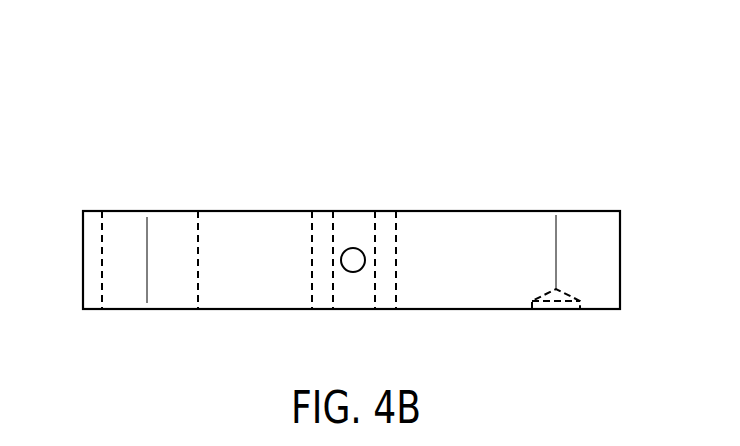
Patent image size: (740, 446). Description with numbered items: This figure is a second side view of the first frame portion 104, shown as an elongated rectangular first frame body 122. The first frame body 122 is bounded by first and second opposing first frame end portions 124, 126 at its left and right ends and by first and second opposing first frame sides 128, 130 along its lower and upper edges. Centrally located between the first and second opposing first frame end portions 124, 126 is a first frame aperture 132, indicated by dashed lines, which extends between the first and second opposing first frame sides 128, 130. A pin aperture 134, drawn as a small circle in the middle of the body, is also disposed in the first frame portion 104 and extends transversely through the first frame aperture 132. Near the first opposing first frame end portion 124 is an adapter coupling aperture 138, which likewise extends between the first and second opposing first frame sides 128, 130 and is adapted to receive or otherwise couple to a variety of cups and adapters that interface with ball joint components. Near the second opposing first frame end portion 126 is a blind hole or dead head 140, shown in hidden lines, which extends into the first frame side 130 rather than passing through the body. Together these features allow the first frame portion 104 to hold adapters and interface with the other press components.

The first frame portion 104 is at (228, 133).
The first frame body 122 is at (242, 218).
The first opposing first frame end portion 124 is at (97, 215).
The second opposing first frame end portion 126 is at (595, 217).
The first opposing first frame side 128 is at (446, 313).
The second opposing first frame side 130 is at (472, 210).
The first frame aperture 132 is at (323, 215).
The pin aperture 134 is at (353, 272).
The adapter coupling aperture 138 is at (124, 304).
The blind hole or dead head 140 is at (551, 312).